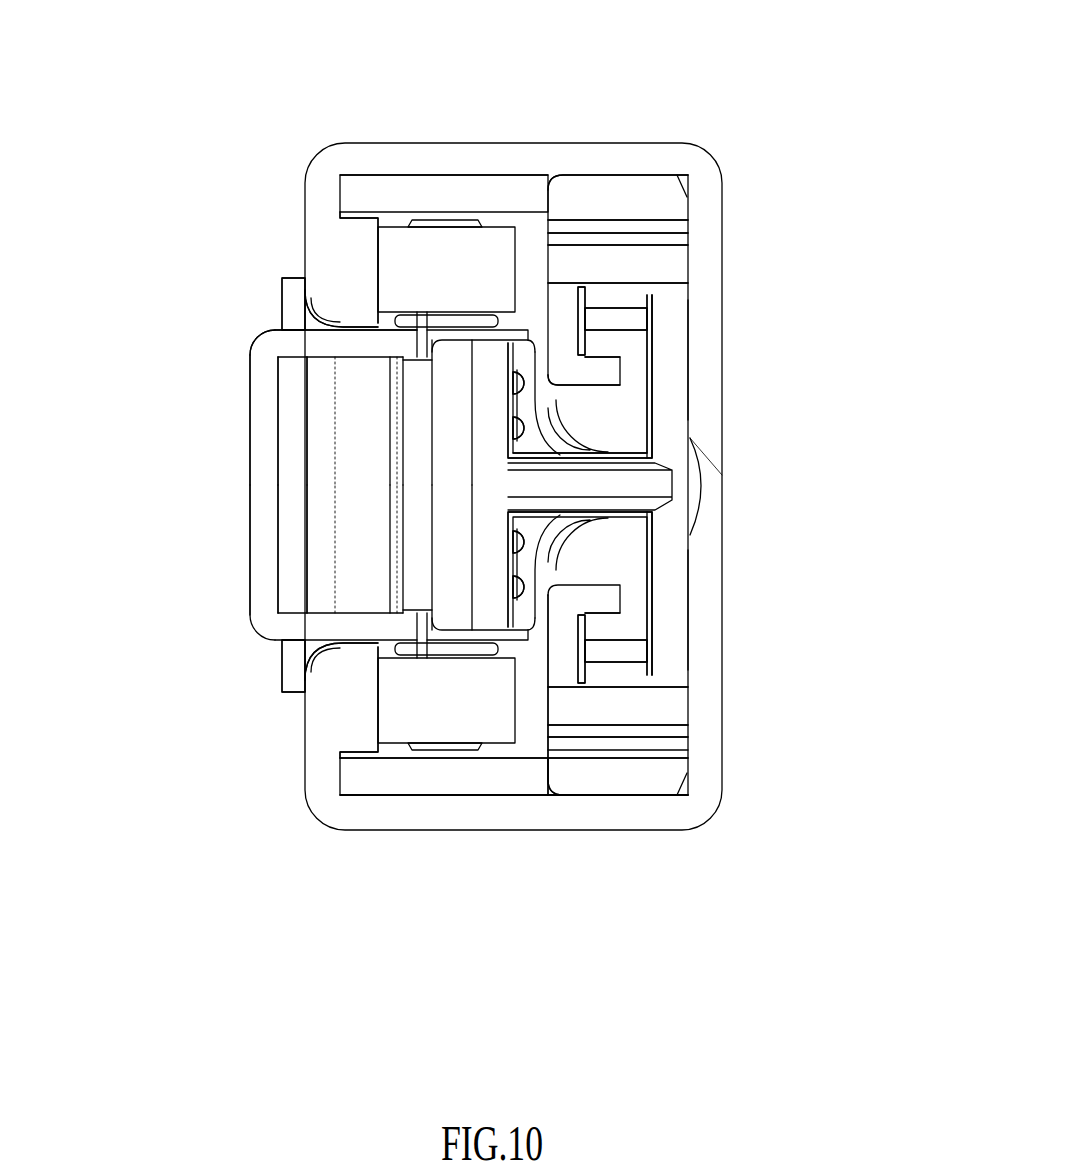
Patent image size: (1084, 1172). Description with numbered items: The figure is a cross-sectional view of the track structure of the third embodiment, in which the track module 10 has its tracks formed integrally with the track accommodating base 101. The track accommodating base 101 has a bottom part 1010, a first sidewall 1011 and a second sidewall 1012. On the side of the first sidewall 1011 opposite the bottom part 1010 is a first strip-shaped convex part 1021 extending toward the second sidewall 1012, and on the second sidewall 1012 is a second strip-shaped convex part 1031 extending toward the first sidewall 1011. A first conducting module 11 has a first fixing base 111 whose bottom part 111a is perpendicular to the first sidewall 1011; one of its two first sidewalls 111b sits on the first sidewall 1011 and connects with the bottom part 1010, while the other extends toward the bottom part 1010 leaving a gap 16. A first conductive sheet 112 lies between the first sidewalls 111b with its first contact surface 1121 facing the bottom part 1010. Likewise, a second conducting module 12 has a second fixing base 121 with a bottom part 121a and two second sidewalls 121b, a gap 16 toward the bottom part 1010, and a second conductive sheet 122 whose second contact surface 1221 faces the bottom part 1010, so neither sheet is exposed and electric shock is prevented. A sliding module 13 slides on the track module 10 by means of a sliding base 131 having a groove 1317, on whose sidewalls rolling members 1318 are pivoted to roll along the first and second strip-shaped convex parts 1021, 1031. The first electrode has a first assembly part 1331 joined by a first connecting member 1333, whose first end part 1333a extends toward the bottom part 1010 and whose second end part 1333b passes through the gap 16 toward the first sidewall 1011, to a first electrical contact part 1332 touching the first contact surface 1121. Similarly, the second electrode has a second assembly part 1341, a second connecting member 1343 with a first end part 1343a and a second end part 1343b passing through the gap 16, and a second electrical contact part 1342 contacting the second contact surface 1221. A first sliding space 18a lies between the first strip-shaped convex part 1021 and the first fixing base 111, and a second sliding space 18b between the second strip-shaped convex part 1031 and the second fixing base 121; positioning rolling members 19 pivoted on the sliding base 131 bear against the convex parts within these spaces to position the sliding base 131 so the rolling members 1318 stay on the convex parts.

The track module 10 is at (527, 833).
The track accommodating base 101 is at (722, 452).
The bottom part 1010 is at (690, 530).
The first sidewall 1011 is at (516, 797).
The second sidewall 1012 is at (512, 170).
The first strip-shaped convex part 1021 is at (340, 692).
The second strip-shaped convex part 1031 is at (345, 287).
The first conducting module 11 is at (672, 677).
The first fixing base 111 is at (638, 795).
The bottom part 111a is at (553, 720).
The first sidewalls 111b is at (660, 632).
The first contact surface 1121 is at (586, 680).
The first conductive sheet 112 is at (590, 683).
The second conducting module 12 is at (677, 295).
The second fixing base 121 is at (632, 190).
The bottom part 121a is at (578, 285).
The second sidewalls 121b is at (633, 282).
The second contact surface 1221 is at (588, 295).
The second conductive sheet 122 is at (582, 290).
The sliding module 13 is at (268, 281).
The sliding base 131 is at (256, 336).
The groove 1317 is at (280, 513).
The rolling member 1318 is at (282, 307).
The first assembly part 1331 is at (515, 573).
The first electrical contact part 1332 is at (617, 658).
The first connecting member 1333 is at (658, 514).
The first end part 1333a is at (585, 508).
The second end part 1333b is at (660, 566).
The second assembly part 1341 is at (512, 418).
The second electrical contact part 1342 is at (620, 303).
The second connecting member 1343 is at (661, 428).
The first end part 1343a is at (620, 450).
The second end part 1343b is at (668, 387).
The gap 16 is at (675, 368).
The first sliding space 18a is at (397, 750).
The second sliding space 18b is at (390, 225).
The positioning rolling member 19 is at (450, 245).